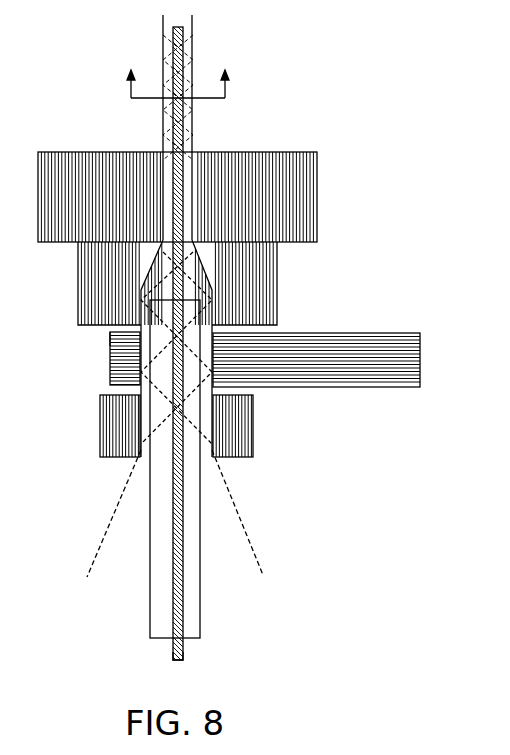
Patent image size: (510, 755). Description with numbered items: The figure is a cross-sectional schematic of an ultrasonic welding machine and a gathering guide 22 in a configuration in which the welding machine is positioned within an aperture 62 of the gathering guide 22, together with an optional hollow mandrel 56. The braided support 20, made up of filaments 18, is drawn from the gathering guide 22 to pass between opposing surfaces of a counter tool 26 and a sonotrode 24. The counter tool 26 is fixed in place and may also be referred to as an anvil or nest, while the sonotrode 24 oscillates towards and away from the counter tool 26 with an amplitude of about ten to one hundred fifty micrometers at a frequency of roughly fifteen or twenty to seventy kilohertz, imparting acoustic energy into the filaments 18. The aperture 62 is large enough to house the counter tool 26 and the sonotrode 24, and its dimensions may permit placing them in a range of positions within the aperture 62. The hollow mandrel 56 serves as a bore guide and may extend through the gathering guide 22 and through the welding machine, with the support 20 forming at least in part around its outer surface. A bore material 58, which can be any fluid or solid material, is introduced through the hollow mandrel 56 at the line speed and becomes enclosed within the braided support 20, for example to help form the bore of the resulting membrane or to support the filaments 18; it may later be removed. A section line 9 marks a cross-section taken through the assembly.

The section line 9- 9 is at (178, 72).
The filaments 18 is at (112, 527).
The braided support 20 is at (197, 126).
The gathering guide 22 is at (306, 197).
The sonotrode 24 is at (420, 360).
The counter tool 26 is at (110, 357).
The hollow mandrel 56 is at (195, 621).
The bore material 58 is at (183, 658).
The aperture 62 is at (106, 338).